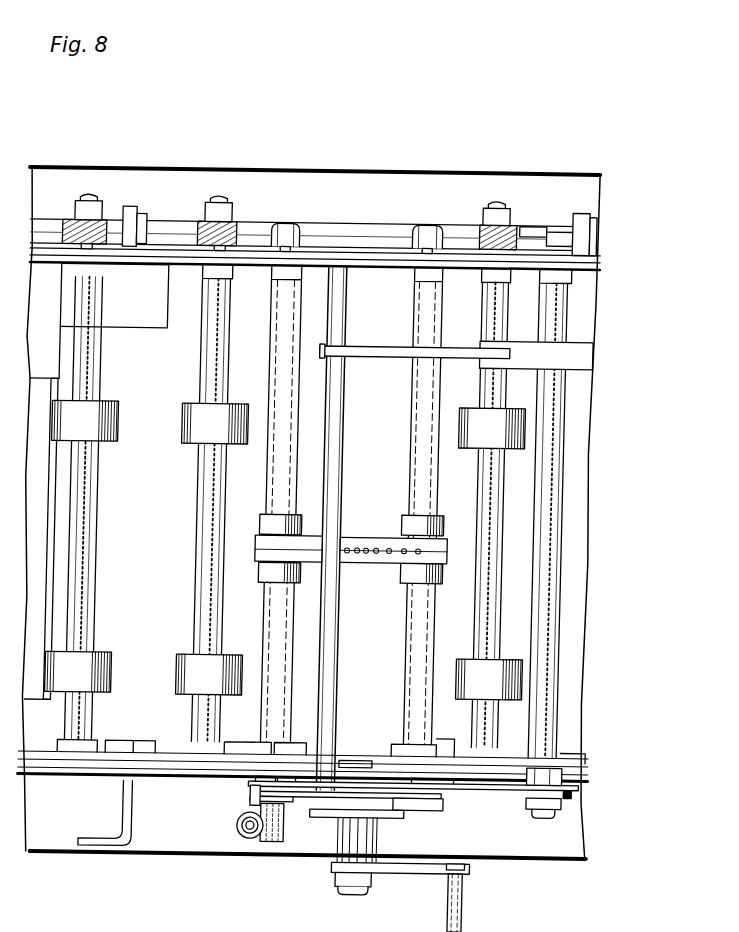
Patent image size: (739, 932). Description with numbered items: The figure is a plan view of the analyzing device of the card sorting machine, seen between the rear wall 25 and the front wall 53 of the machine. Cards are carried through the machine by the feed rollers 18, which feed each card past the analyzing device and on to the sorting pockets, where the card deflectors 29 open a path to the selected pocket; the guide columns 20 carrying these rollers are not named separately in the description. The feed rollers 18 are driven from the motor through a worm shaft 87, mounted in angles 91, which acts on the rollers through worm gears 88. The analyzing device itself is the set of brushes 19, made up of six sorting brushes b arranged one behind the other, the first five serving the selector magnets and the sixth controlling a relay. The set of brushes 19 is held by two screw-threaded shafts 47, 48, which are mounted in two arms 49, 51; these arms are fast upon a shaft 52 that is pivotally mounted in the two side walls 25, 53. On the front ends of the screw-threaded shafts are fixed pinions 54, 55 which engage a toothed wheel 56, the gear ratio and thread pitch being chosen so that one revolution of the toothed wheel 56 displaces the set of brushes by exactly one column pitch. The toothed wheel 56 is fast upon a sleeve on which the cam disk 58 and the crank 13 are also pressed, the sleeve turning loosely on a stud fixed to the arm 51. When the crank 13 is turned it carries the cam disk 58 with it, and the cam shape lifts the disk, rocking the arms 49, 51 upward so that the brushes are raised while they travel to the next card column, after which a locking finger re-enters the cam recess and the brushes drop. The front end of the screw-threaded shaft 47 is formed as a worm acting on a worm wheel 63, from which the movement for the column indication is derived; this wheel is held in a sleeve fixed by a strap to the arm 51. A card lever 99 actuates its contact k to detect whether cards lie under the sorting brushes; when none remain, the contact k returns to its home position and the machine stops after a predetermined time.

The worm shaft 87 is at (48, 220).
The angles 91 is at (133, 216).
The worm gears 88 is at (223, 221).
The arm 49 is at (307, 247).
The rear wall 25 is at (382, 266).
The card deflectors 29 is at (103, 314).
The card lever 99 is at (381, 357).
The contact k is at (576, 354).
The guide column 20 is at (216, 485).
The screw-threaded shaft 47 is at (282, 484).
The screw-threaded shaft 48 is at (421, 486).
The set of brushes 19 is at (269, 553).
The sorting brushes b is at (379, 554).
The shaft 52 is at (550, 603).
The feed rollers 18 is at (197, 679).
The front wall 53 is at (579, 780).
The pinion 54 is at (267, 799).
The worm wheel 63 is at (248, 841).
The toothed wheel 56 is at (314, 802).
The cam disk 58 is at (329, 813).
The crank 13 is at (412, 866).
The pinion 55 is at (434, 805).
The arm 51 is at (570, 794).